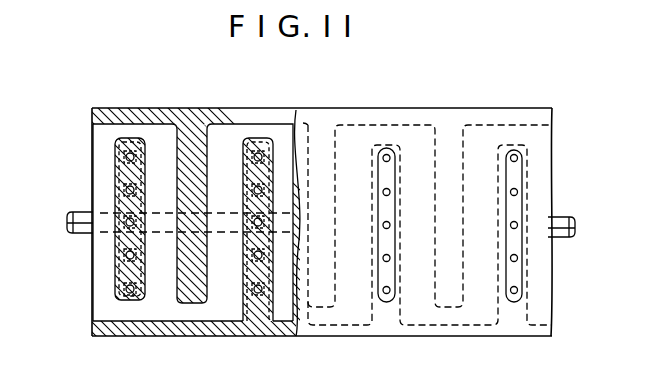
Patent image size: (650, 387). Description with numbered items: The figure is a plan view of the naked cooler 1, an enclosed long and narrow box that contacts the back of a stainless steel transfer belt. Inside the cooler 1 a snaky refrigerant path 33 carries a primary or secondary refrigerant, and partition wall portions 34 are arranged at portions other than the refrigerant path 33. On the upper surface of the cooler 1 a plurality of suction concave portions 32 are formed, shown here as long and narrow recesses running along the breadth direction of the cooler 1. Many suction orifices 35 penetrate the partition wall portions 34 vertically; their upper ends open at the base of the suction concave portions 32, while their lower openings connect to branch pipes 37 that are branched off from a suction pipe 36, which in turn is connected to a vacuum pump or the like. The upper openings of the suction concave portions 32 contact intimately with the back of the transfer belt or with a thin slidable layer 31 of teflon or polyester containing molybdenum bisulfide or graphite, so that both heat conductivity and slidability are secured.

The cooler 1 is at (362, 108).
The slidable layer 31 is at (419, 132).
The suction concave portions 32 is at (518, 175).
The refrigerant path 33 is at (230, 137).
The partition wall portions 34 is at (247, 163).
The suction orifices 35 is at (134, 188).
The suction pipe 36 is at (72, 212).
The branch pipes 37 is at (250, 271).